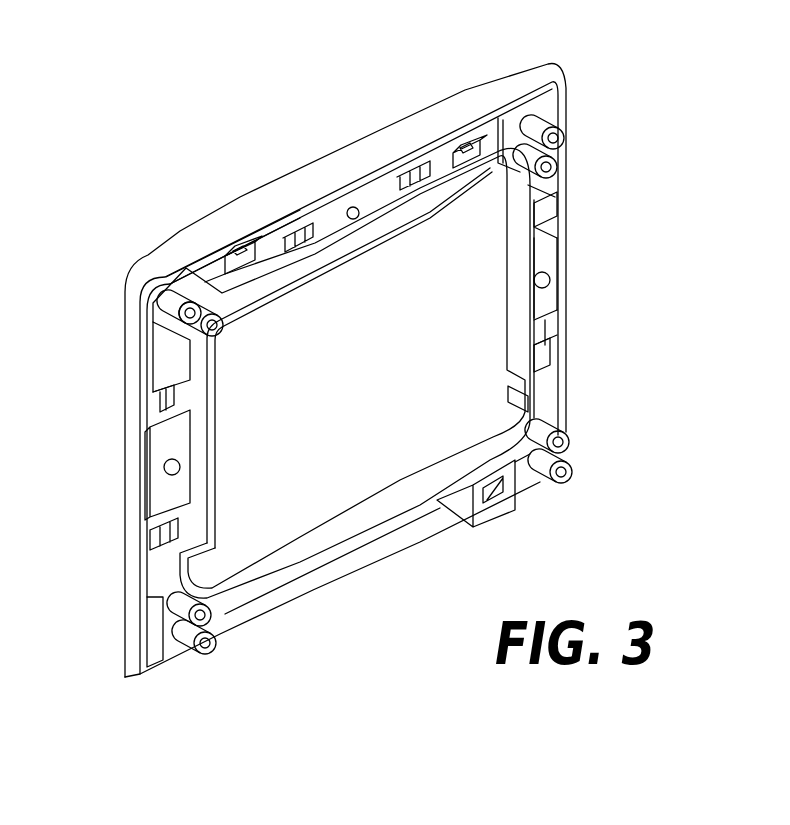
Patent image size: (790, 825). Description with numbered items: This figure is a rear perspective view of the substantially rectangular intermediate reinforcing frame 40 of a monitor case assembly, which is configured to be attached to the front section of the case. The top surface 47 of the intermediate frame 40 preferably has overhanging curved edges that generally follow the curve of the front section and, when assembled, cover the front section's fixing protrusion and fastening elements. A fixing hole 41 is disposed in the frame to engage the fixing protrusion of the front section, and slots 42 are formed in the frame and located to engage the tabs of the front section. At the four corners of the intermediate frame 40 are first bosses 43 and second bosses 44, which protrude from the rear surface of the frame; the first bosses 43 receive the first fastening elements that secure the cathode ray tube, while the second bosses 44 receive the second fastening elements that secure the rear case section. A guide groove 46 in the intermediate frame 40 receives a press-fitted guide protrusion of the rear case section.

The intermediate reinforcing frame 40 is at (483, 97).
The fixing hole 41 is at (350, 207).
The slots 42 is at (405, 167).
The first bosses 43 is at (559, 170).
The second bosses 44 is at (566, 136).
The guide groove 46 is at (150, 472).
The top surface 47 is at (253, 222).